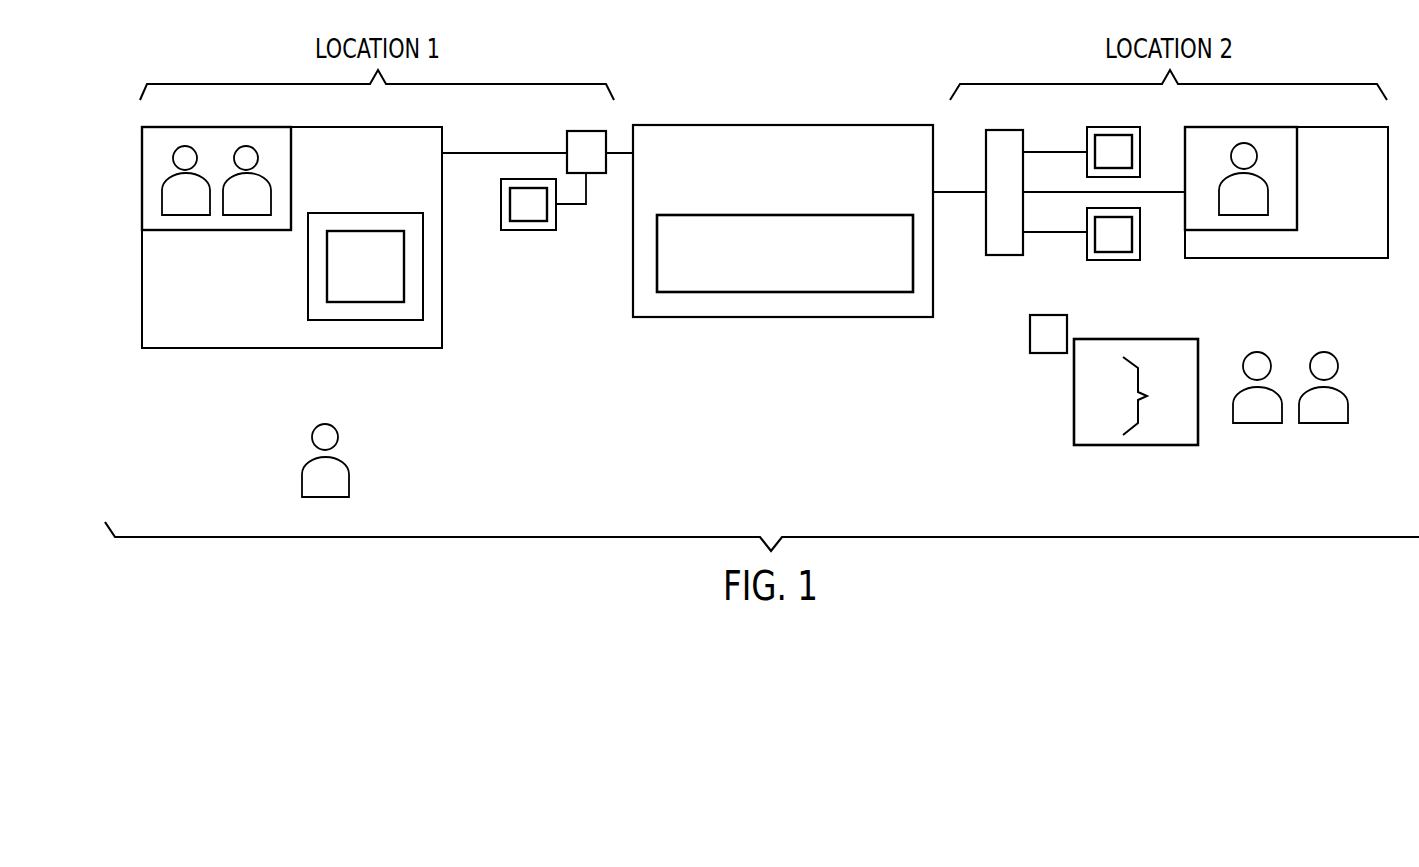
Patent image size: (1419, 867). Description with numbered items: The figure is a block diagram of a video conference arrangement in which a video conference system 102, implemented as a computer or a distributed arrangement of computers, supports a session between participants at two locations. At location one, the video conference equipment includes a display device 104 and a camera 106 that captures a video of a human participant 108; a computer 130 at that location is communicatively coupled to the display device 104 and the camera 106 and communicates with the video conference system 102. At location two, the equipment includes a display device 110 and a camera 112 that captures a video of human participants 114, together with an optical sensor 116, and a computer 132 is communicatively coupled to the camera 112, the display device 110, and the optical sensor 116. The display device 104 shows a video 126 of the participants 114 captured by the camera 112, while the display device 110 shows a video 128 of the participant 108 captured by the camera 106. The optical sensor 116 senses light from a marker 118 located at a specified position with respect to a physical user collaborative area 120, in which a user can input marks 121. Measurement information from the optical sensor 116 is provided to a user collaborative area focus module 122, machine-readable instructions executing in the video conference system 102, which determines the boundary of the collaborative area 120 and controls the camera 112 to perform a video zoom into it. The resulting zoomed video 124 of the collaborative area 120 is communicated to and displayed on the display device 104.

The video conference system 102 is at (783, 125).
The display device 104 is at (365, 127).
The camera 106 is at (527, 230).
The human participant 108 is at (347, 460).
The display device 110 is at (1338, 127).
The camera 112 is at (1112, 127).
The human participants 114 is at (1357, 428).
The optical sensor 116 is at (1115, 260).
The marker 118 is at (1048, 315).
The physical user collaborative area 120 is at (1135, 339).
The marks 121 is at (1155, 396).
The user collaborative area focus module 122 is at (720, 215).
The zoomed video 124 is at (365, 213).
The video 126 is at (216, 230).
The video 128 is at (1297, 202).
The computer 130 is at (586, 131).
The computer 132 is at (1005, 130).